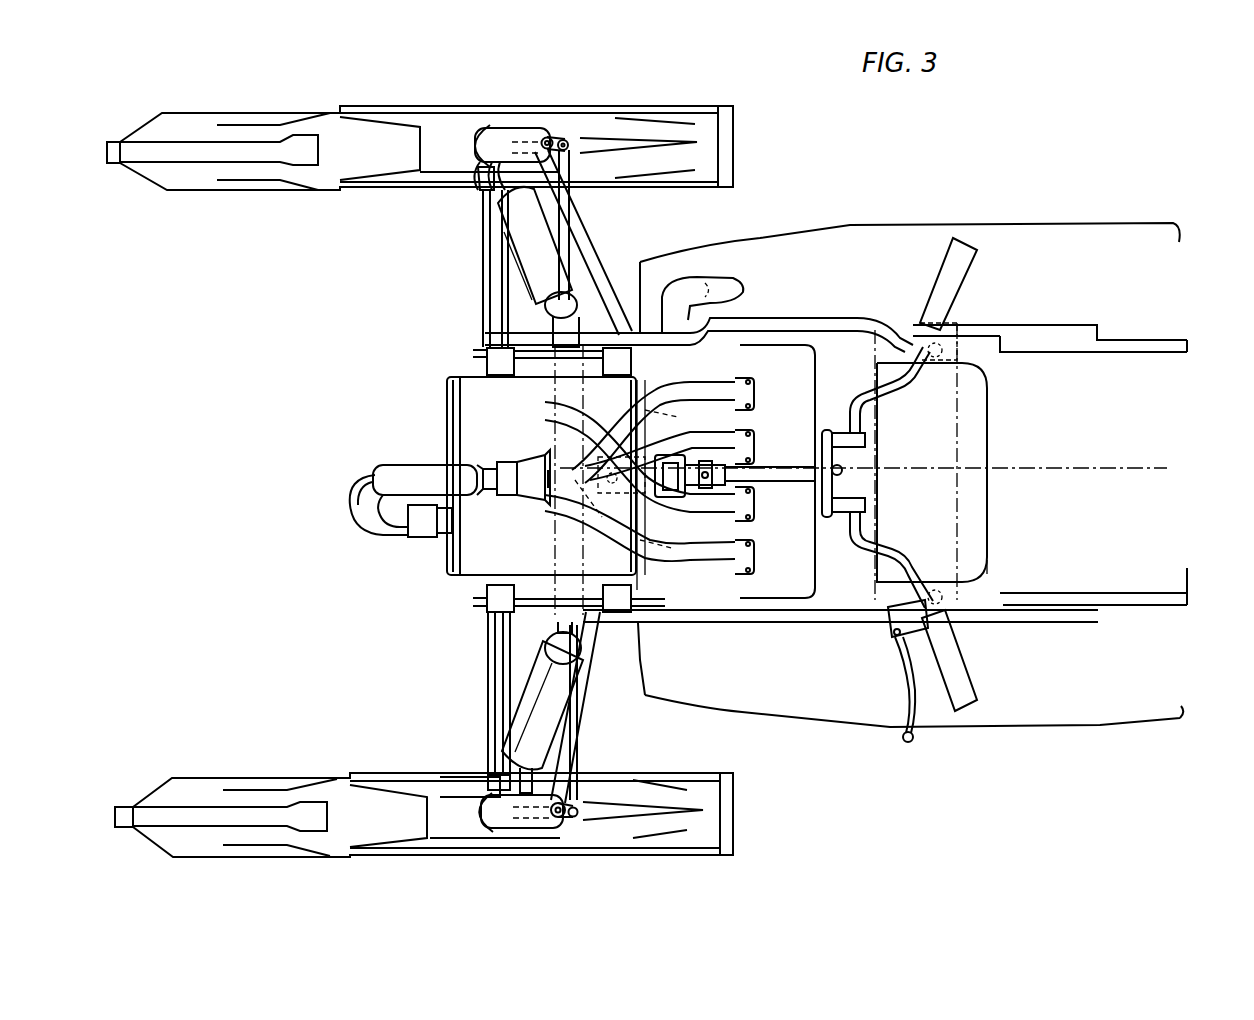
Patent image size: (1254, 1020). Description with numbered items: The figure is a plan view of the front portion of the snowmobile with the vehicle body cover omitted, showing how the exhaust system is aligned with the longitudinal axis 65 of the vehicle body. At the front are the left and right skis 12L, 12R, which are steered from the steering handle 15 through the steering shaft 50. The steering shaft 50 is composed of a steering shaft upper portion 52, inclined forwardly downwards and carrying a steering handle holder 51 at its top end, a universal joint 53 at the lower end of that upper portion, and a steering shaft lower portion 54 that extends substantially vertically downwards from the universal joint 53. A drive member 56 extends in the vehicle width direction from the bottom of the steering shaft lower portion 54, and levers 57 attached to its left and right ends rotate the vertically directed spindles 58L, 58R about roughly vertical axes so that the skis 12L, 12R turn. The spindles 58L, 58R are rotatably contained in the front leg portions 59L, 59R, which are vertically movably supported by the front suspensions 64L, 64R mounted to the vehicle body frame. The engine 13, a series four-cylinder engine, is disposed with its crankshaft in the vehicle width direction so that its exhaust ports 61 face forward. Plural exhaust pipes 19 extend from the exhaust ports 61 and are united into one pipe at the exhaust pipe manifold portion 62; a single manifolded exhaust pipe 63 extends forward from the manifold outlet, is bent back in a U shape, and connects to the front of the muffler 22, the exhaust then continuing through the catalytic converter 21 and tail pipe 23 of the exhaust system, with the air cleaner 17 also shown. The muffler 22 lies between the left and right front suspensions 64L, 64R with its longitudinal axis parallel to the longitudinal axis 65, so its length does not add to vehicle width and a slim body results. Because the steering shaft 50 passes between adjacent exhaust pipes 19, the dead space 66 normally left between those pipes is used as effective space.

The right ski 12R is at (233, 187).
The left ski 12L is at (252, 780).
The engine 13 is at (793, 367).
The steering handle 15 is at (897, 360).
The air cleaner 17 is at (935, 395).
The exhaust pipes 19 is at (655, 373).
The catalytic converter 21 is at (362, 478).
The muffler 22 is at (485, 562).
The tail pipe 23 is at (688, 288).
The steering shaft 50 is at (877, 788).
The steering handle holder 51 is at (830, 517).
The steering shaft upper portion 52 is at (803, 547).
The universal joint 53 is at (790, 475).
The steering shaft lower portion 54 is at (680, 578).
The drive member 56 is at (566, 198).
The levers 57 is at (563, 143).
The right spindle 58R is at (523, 138).
The left spindle 58L is at (515, 815).
The right front leg portion 59R is at (500, 140).
The left front leg portion 59L is at (483, 820).
The exhaust ports 61 is at (747, 380).
The exhaust pipe manifold portion 62 is at (523, 487).
The manifolded exhaust pipe 63 is at (412, 480).
The right front suspension 64R is at (537, 262).
The left front suspension 64L is at (537, 705).
The longitudinal axis of the vehicle body 65 is at (1143, 467).
The dead space 66 is at (622, 447).